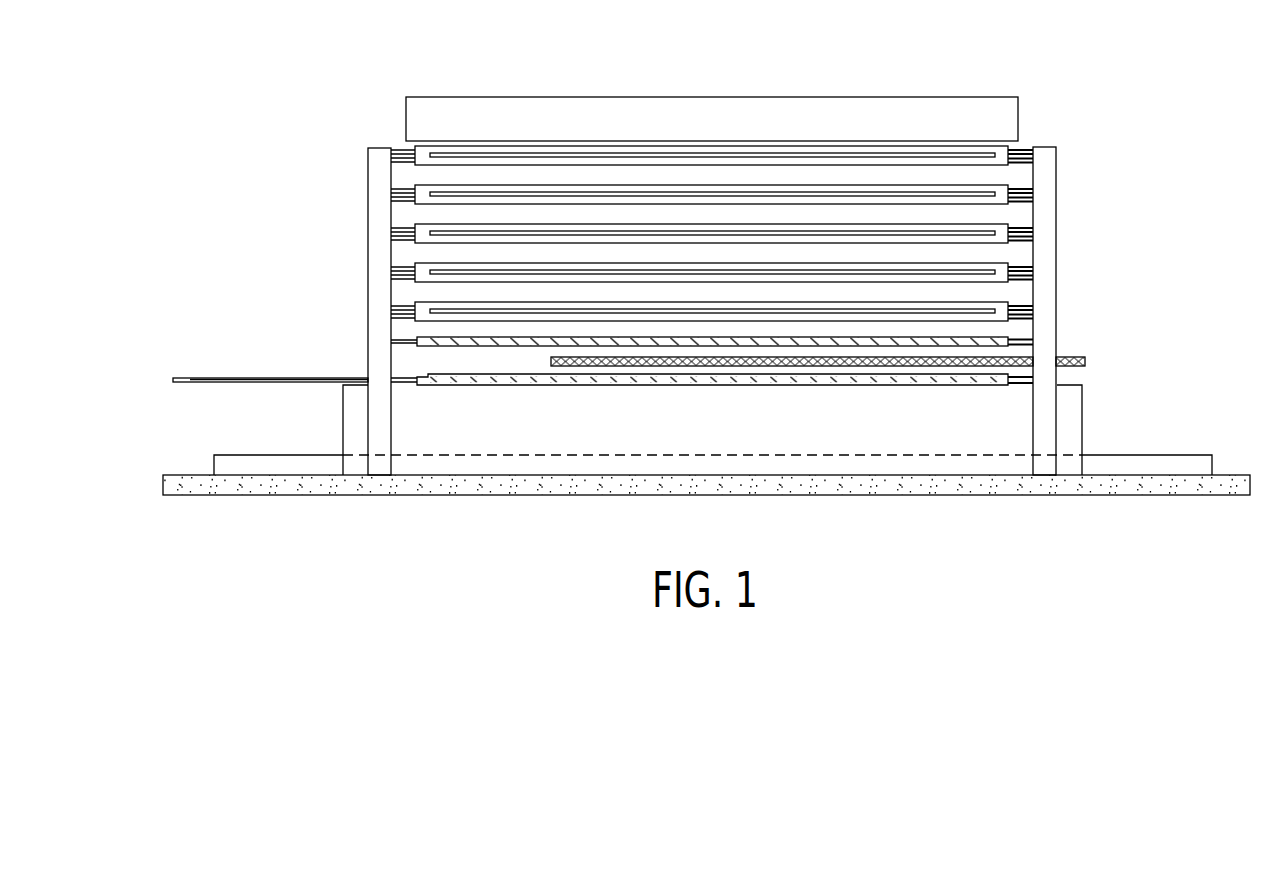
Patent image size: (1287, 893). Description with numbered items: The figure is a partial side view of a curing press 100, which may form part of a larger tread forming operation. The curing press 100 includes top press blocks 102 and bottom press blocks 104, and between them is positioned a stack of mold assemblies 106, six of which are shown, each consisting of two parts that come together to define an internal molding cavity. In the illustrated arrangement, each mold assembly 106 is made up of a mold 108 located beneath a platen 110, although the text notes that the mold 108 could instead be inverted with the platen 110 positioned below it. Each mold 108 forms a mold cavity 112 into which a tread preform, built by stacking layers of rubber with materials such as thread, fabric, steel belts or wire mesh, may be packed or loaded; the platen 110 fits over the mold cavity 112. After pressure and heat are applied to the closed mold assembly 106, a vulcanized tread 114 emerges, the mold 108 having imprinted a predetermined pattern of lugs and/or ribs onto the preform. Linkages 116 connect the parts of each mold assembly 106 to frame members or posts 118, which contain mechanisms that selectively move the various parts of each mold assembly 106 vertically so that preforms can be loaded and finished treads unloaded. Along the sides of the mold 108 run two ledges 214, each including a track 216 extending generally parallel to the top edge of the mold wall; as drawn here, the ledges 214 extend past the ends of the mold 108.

The curing press 100 is at (1045, 73).
The top press blocks 102 is at (958, 97).
The bottom press blocks 104 is at (1015, 449).
The mold assembly 106 is at (1012, 179).
The mold 108 is at (1000, 385).
The platen 110 is at (1000, 333).
The mold cavity 112 is at (1000, 361).
The vulcanized tread 114 is at (1078, 355).
The linkages 116 is at (1013, 258).
The frame members or posts 118 is at (1043, 206).
The ledges 214 is at (183, 377).
The track 216 is at (210, 378).